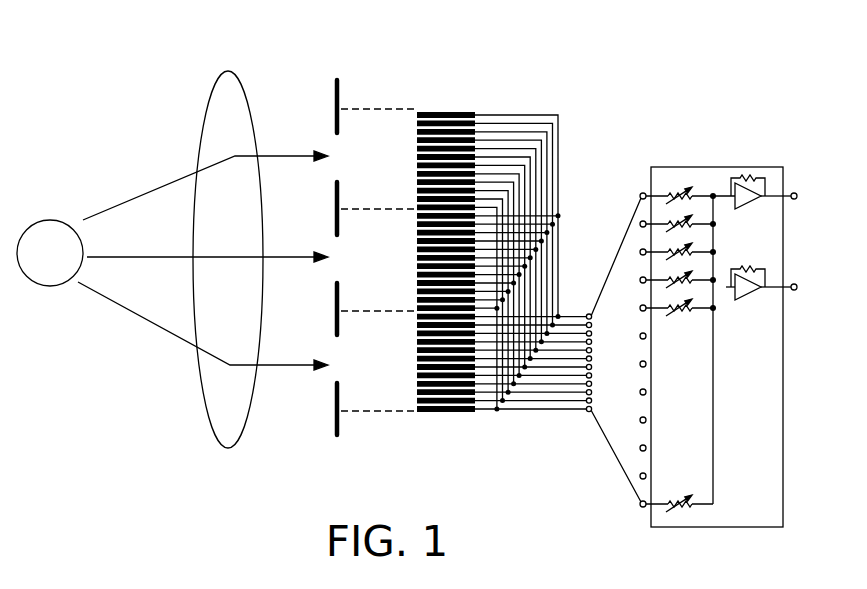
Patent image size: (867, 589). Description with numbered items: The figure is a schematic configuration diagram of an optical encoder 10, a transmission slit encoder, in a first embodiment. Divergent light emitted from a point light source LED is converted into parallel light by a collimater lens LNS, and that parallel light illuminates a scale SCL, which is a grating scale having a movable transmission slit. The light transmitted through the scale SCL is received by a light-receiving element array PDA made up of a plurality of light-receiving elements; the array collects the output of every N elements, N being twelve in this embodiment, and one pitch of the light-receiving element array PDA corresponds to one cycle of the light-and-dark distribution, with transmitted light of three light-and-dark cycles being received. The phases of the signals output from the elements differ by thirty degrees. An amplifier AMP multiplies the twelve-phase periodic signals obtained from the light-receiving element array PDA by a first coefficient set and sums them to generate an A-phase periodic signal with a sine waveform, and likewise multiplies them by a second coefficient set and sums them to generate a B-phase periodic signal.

The optical encoder 10 is at (633, 80).
The point light source LED is at (172, 260).
The collimater lens LNS is at (228, 275).
The scale SCL is at (365, 274).
The light-receiving element array PDA is at (605, 326).
The amplifier AMP is at (748, 333).